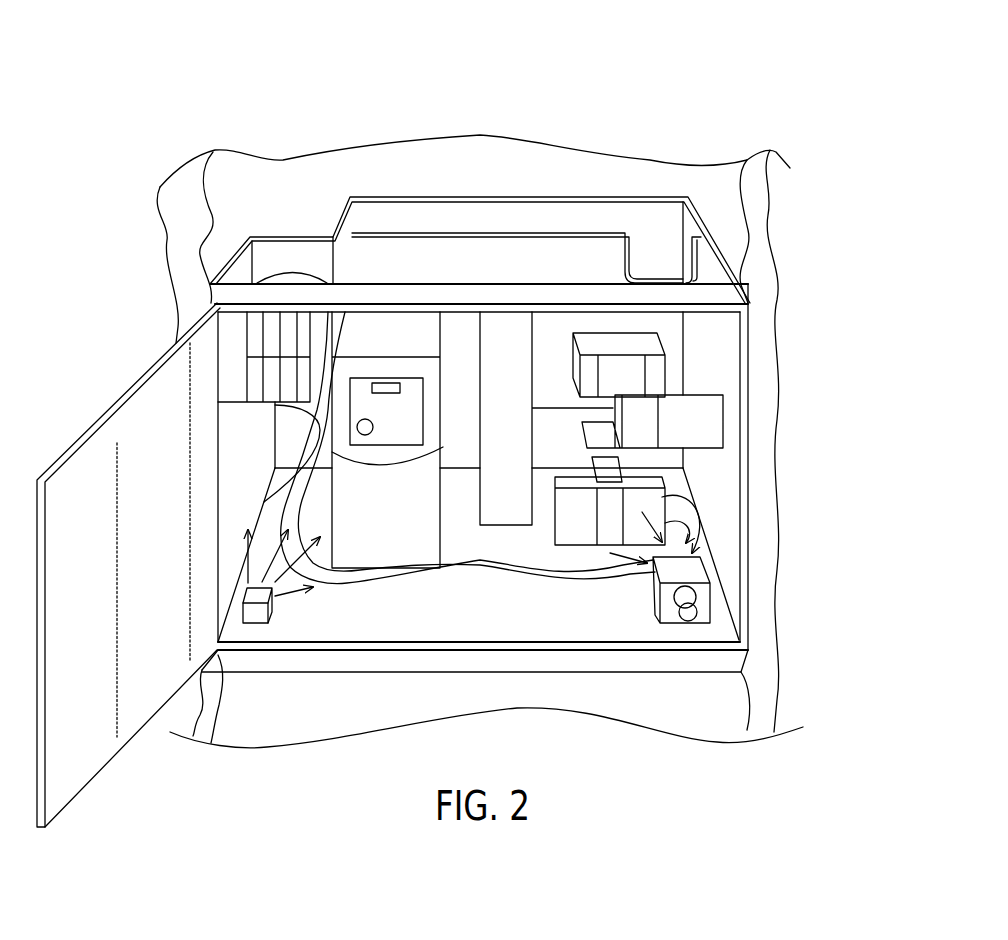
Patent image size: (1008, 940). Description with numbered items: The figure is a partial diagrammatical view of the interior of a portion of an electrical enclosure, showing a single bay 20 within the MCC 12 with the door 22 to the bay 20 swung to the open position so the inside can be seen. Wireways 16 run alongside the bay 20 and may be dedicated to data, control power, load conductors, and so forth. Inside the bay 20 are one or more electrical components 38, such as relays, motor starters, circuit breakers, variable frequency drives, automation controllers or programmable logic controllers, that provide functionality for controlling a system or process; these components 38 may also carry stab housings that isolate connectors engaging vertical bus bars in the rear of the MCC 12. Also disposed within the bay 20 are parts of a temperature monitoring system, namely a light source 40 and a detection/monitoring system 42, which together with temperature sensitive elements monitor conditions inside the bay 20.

The MCC 12 is at (573, 67).
The wireways 16 is at (762, 167).
The bay 20 is at (698, 212).
The door 22 is at (148, 390).
The electrical components 38 is at (403, 545).
The light source 40 is at (253, 623).
The detection/monitoring system 42 is at (668, 623).